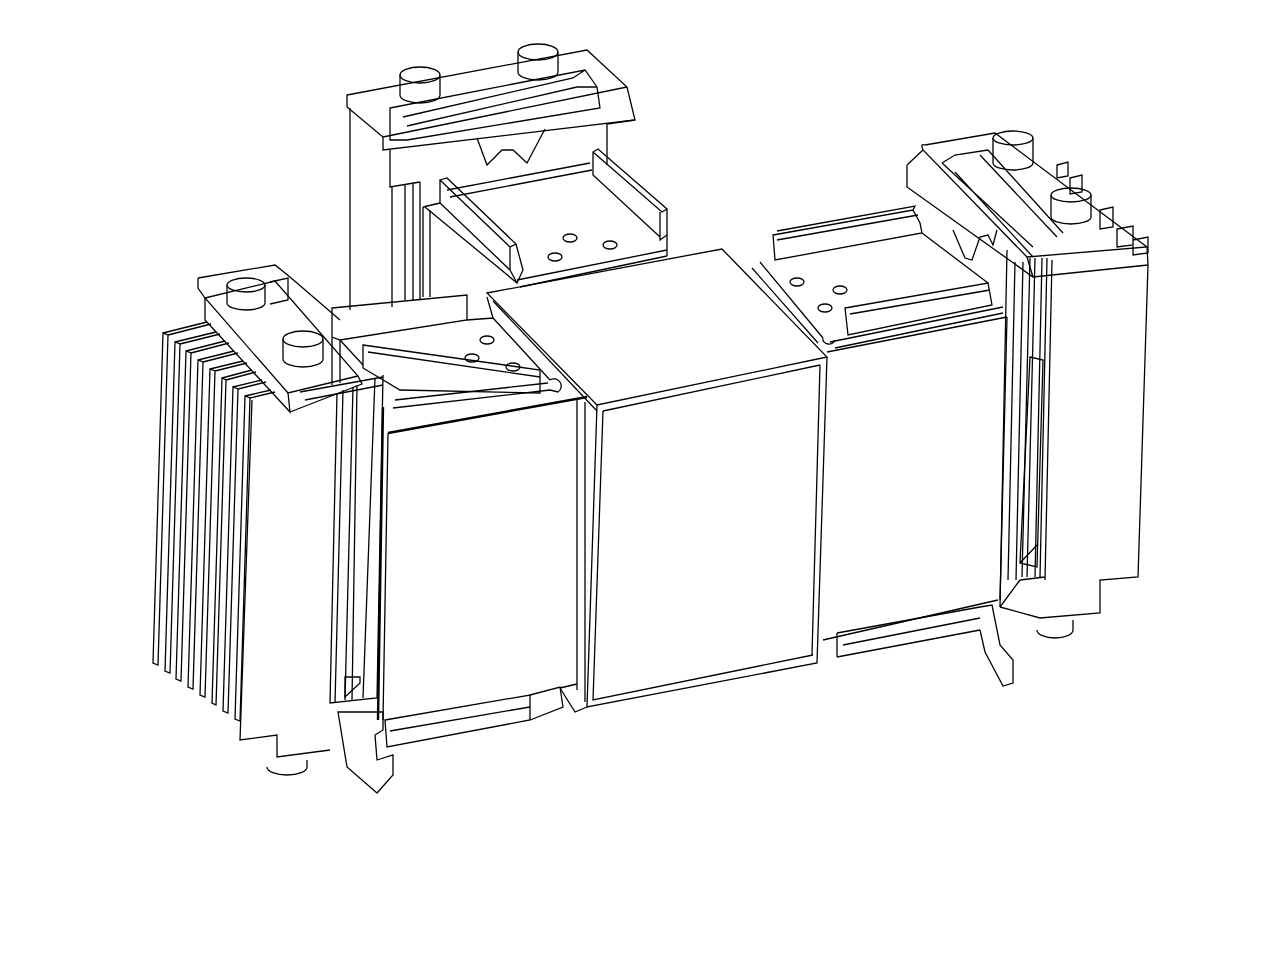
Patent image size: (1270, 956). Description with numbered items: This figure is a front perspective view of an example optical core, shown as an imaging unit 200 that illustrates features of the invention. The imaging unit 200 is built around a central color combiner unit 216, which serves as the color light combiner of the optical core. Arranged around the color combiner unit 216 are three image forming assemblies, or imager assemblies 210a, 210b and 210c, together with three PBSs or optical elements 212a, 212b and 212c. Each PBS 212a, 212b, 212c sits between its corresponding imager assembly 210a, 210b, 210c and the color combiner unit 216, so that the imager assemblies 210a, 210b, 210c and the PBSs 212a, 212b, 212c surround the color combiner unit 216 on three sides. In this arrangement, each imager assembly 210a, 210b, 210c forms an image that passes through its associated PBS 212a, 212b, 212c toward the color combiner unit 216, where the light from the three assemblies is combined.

The imaging unit 200 is at (742, 86).
The imager assembly 210a is at (260, 732).
The imager assembly 210b is at (353, 160).
The imager assembly 210c is at (1133, 393).
The PBS 212a is at (483, 665).
The PBS 212b is at (430, 268).
The PBS 212c is at (912, 573).
The color combiner unit 216 is at (715, 660).